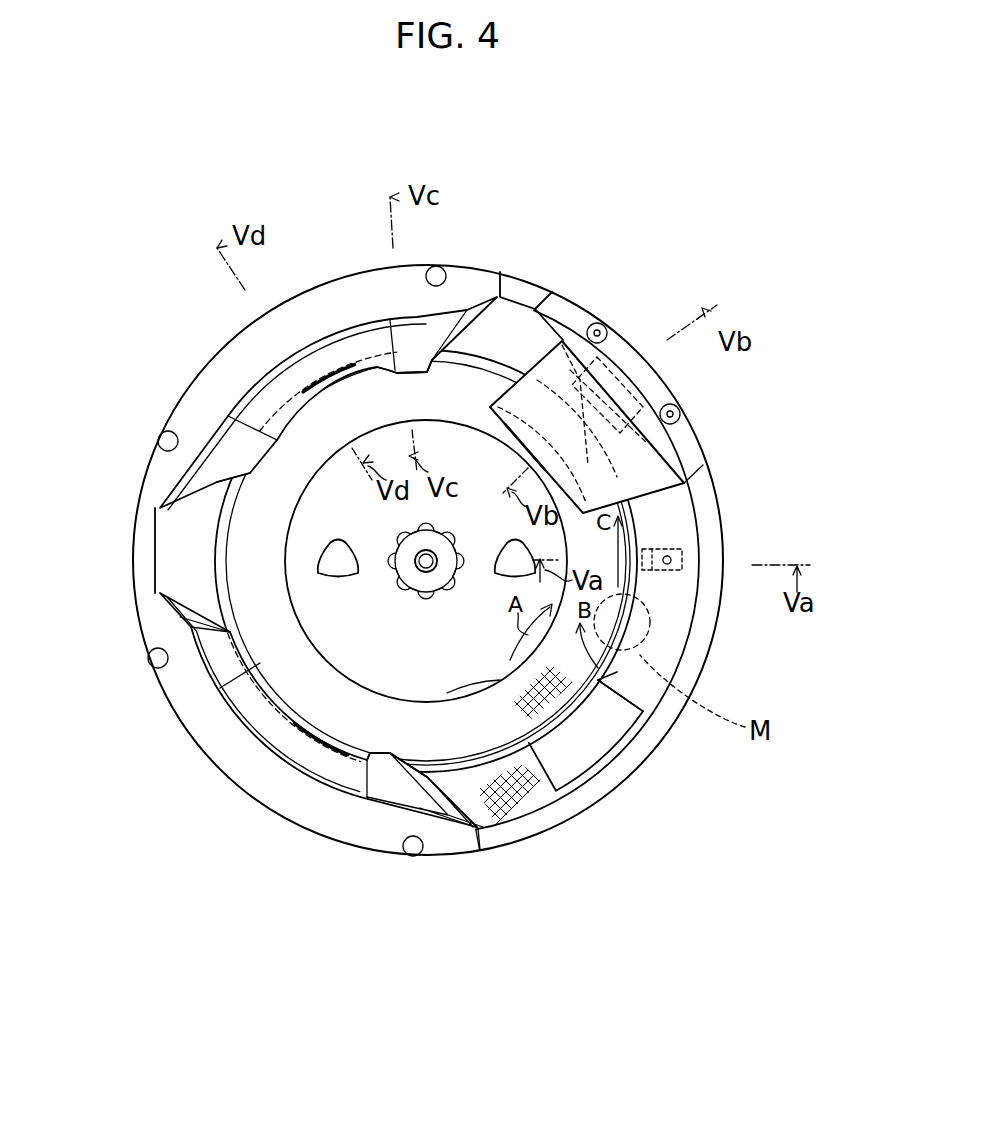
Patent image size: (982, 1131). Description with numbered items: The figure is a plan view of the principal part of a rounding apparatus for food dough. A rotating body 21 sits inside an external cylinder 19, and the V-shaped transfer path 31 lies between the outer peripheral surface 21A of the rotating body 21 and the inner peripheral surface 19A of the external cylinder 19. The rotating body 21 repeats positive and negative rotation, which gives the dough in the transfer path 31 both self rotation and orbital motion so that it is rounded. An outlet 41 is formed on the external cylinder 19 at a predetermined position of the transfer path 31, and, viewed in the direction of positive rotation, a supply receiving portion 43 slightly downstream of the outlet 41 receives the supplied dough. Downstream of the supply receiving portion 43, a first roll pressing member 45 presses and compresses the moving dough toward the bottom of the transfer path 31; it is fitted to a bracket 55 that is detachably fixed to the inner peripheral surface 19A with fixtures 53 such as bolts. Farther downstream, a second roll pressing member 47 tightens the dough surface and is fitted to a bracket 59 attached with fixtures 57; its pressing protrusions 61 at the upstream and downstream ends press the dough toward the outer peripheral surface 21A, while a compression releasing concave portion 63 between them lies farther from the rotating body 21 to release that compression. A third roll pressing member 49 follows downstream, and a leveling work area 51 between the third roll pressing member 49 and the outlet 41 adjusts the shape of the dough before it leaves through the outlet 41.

The external cylinder 19 is at (707, 658).
The inner peripheral surface 19A is at (645, 676).
The rotating body 21 is at (440, 657).
The outer peripheral surface 21A is at (474, 712).
The transfer path 31 is at (480, 762).
The outlet 41 is at (600, 748).
The supply receiving portion 43 is at (655, 615).
The first roll pressing member 45 is at (526, 455).
The second roll pressing member 47 is at (325, 300).
The third roll pressing member 49 is at (317, 765).
The leveling work area 51 is at (535, 802).
The fixtures 53 is at (600, 323).
The bracket 55 is at (657, 466).
The fixtures 57 is at (436, 268).
The bracket 59 is at (515, 300).
The pressing protrusions 61 is at (408, 370).
The compression releasing concave portion 63 is at (323, 387).